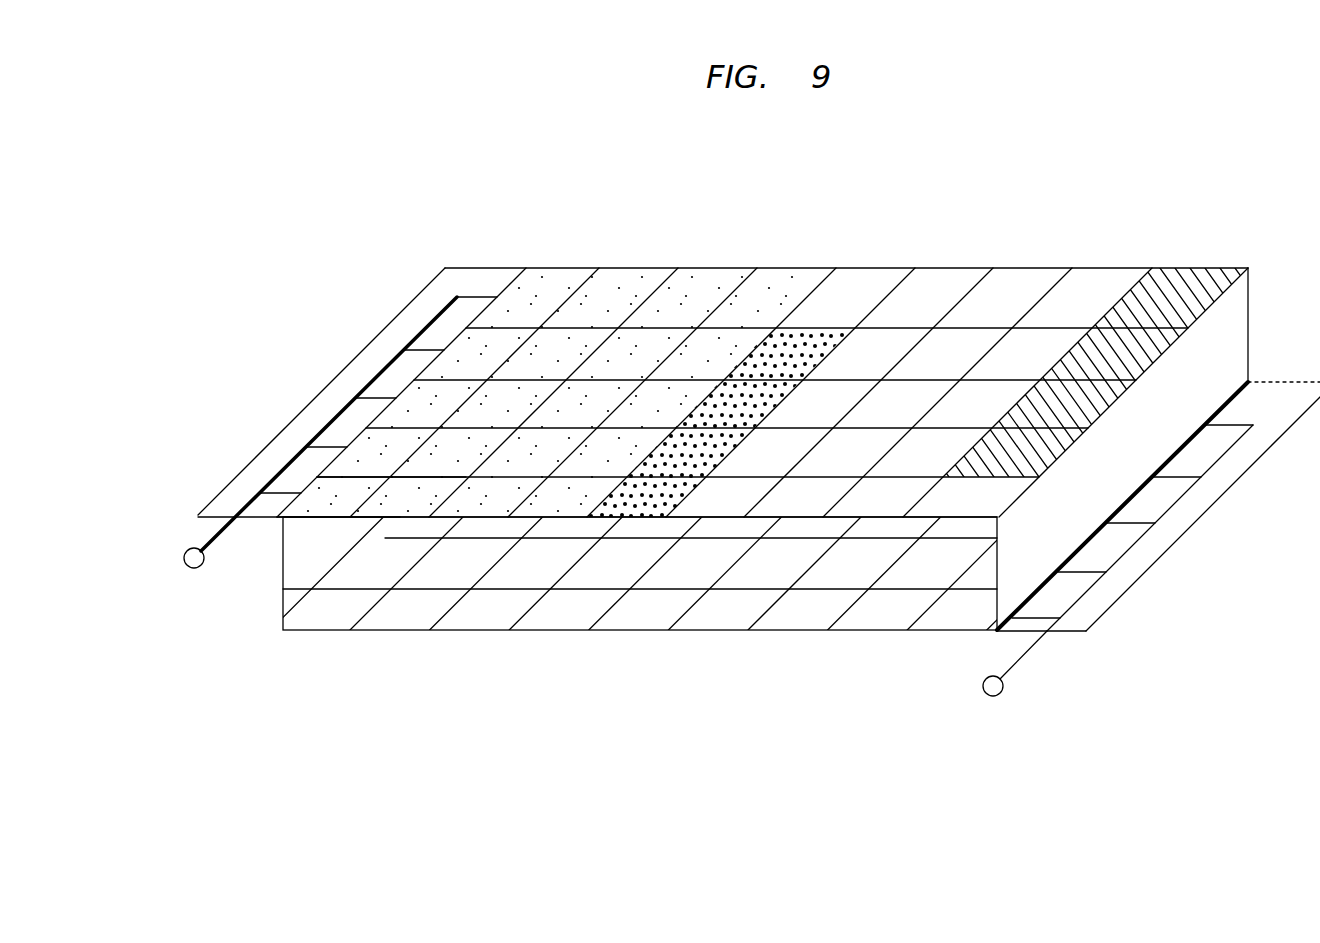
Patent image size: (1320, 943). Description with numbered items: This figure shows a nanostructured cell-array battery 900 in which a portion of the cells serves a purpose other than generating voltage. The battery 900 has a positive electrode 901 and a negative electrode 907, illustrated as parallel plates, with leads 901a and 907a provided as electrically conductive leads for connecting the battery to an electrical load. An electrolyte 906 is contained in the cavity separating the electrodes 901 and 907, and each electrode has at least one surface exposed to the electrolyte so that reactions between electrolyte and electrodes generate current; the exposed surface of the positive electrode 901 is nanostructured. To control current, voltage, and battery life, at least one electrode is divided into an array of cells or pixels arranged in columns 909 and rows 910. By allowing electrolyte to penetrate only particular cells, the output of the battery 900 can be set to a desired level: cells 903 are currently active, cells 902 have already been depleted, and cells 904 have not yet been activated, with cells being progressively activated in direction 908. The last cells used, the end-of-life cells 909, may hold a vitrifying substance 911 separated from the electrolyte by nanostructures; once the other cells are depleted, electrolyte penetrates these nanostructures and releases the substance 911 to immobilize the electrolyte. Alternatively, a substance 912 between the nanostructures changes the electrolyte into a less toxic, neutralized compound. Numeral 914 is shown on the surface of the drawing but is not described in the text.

The battery 900 is at (300, 250).
The positive electrode 901 is at (374, 347).
The lead 901a is at (183, 556).
The depleted cells 902 is at (510, 387).
The active cells 903 is at (685, 443).
The unactivated cells 904 is at (1075, 270).
The electrolyte 906 is at (540, 582).
The negative electrode 907 is at (1193, 512).
The lead 907a is at (1000, 695).
The direction 908 is at (700, 245).
The columns of cells 909 is at (442, 517).
The rows of cells 910 is at (1117, 388).
The vitrifying substance 911 is at (355, 490).
The substance 912 is at (312, 503).
The top surface grid 914 is at (861, 269).